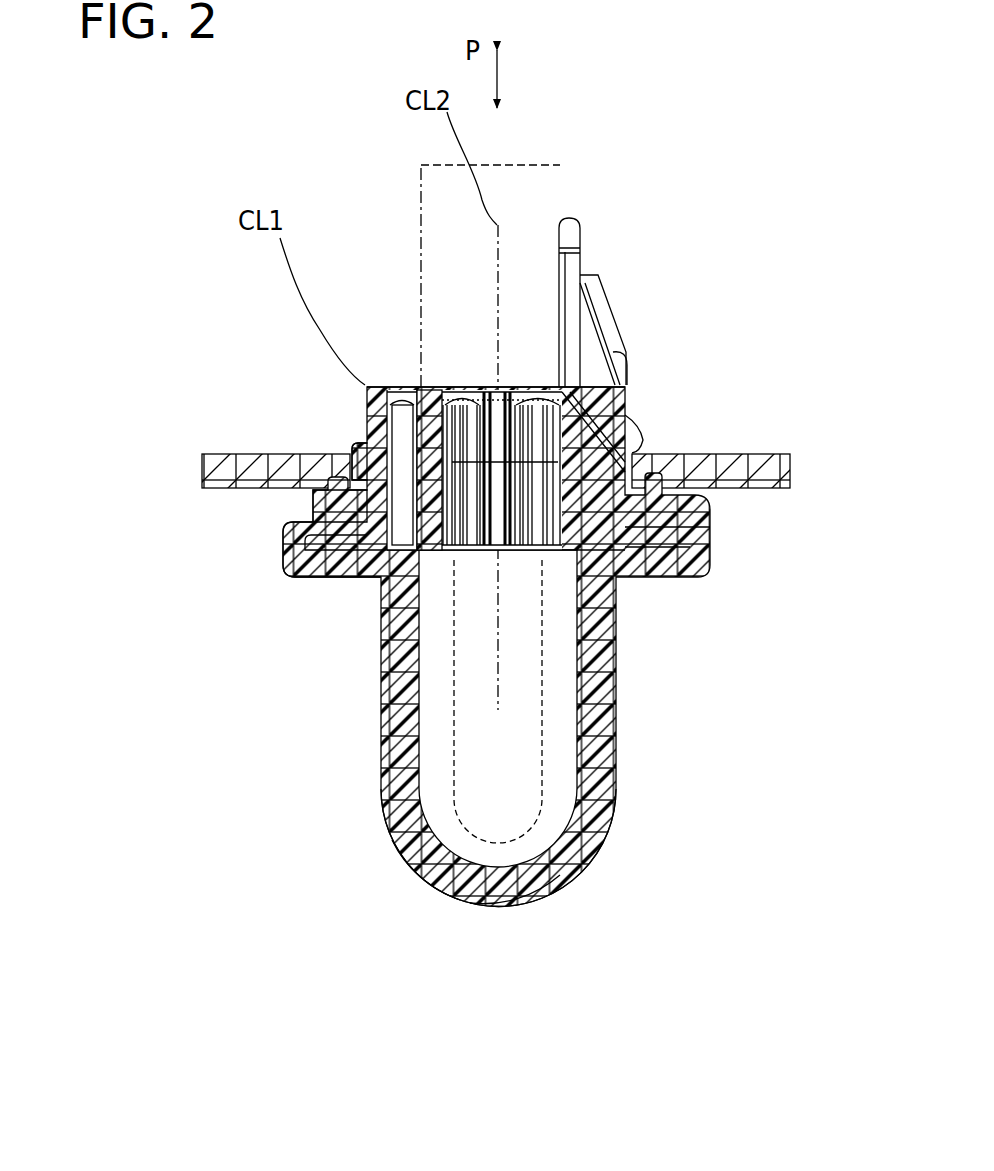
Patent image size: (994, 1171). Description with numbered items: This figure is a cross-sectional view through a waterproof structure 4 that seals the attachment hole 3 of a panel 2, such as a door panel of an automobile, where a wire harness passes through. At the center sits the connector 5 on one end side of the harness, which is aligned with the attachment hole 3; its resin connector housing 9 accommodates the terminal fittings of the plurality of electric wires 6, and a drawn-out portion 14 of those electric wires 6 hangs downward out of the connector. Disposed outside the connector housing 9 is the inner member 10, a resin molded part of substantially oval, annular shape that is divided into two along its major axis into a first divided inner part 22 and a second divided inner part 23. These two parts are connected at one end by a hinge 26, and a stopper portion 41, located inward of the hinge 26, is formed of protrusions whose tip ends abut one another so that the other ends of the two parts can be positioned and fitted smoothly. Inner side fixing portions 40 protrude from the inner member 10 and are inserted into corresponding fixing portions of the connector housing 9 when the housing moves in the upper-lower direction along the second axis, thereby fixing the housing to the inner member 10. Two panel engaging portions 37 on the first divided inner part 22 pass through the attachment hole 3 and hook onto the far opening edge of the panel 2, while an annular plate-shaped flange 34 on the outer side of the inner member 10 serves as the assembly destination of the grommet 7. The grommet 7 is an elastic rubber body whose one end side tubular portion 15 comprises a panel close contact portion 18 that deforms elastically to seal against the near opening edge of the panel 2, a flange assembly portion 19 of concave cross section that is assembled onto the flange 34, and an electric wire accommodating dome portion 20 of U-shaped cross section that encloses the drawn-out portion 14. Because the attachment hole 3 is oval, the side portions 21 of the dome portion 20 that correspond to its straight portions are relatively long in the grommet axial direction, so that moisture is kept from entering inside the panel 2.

The panel 2 is at (735, 470).
The attachment hole 3 is at (632, 410).
The waterproof structure 4 is at (406, 672).
The connector 5 is at (469, 413).
The electric wires 6 is at (575, 746).
The grommet 7 is at (624, 782).
The connector housing 9 is at (623, 255).
The inner member 10 is at (598, 264).
The drawn-out portion 14 is at (540, 832).
The one end side tubular portion 15 is at (445, 905).
The panel close contact portion 18 is at (315, 508).
The flange assembly portion 19 is at (278, 560).
The electric wire accommodating dome portion 20 is at (522, 892).
The side portions 21 is at (616, 641).
The first divided inner part 22 is at (410, 385).
The second divided inner part 23 is at (606, 357).
The hinge 26 is at (496, 385).
The flange 34 is at (325, 540).
The panel engaging portions 37 is at (350, 440).
The inner side fixing portions 40 is at (568, 213).
The stopper portion 41 is at (500, 560).